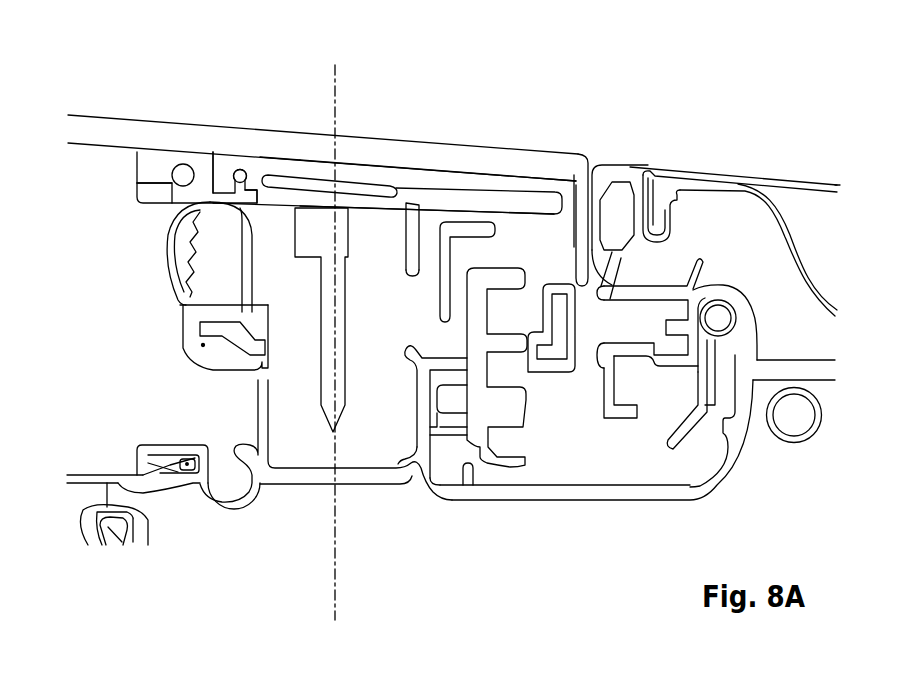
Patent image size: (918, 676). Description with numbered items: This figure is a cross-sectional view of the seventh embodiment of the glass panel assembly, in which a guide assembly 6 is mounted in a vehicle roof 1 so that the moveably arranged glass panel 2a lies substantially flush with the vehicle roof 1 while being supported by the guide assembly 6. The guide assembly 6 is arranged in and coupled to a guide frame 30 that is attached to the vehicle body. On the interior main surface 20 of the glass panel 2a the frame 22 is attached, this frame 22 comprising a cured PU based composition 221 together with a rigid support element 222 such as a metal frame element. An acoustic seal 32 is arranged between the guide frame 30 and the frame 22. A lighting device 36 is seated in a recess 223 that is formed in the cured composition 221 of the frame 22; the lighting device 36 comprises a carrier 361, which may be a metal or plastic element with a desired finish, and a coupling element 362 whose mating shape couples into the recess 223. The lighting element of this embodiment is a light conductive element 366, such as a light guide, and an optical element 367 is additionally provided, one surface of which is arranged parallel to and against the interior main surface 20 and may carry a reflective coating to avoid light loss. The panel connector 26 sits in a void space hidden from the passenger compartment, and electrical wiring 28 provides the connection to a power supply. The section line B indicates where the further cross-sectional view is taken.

The vehicle roof 1 is at (744, 190).
The guide assembly 6 is at (536, 245).
The interior main surface 20 is at (73, 155).
The glass panel 2a is at (302, 158).
The frame 22 is at (277, 222).
The panel connector 26 is at (388, 190).
The electrical wiring 28 is at (344, 365).
The guide frame 30 is at (407, 474).
The acoustic seal 32 is at (180, 292).
The lighting device 36 is at (170, 142).
The carrier 361 is at (200, 163).
The coupling element 362 is at (250, 158).
The recess 223 is at (233, 153).
The light conductive element 366 is at (182, 178).
The optical element 367 is at (150, 172).
The cured PU based composition 221 is at (352, 176).
The rigid support element 222 is at (388, 192).
The section line B- B is at (326, 95).